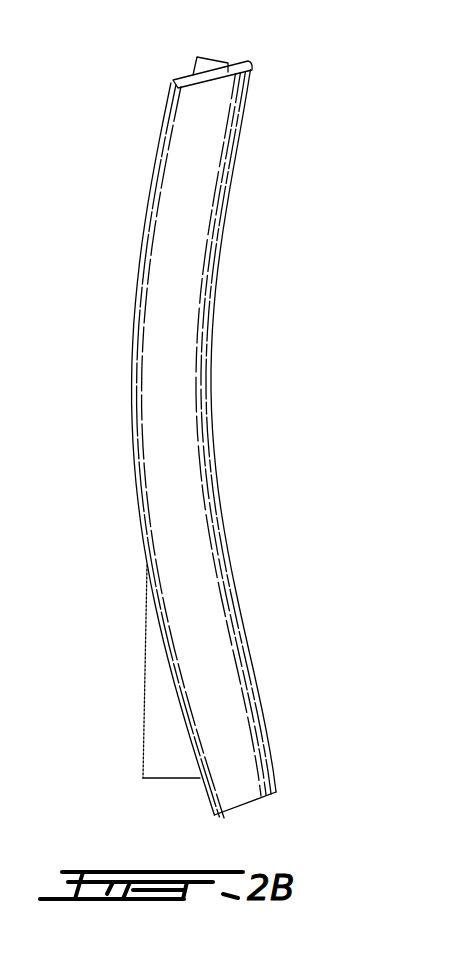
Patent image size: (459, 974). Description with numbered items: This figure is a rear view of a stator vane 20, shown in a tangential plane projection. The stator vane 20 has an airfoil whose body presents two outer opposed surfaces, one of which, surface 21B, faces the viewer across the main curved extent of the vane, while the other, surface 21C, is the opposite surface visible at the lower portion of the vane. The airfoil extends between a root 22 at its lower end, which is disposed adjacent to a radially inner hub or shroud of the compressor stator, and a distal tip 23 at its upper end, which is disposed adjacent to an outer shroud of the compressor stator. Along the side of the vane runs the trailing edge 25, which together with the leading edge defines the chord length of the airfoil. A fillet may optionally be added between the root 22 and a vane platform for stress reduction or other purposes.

The stator vane 20 is at (128, 107).
The outer opposed surface 21B is at (180, 371).
The outer opposed surface 21C is at (164, 709).
The root 22 is at (172, 779).
The distal tip 23 is at (240, 57).
The trailing edge 25 is at (137, 322).